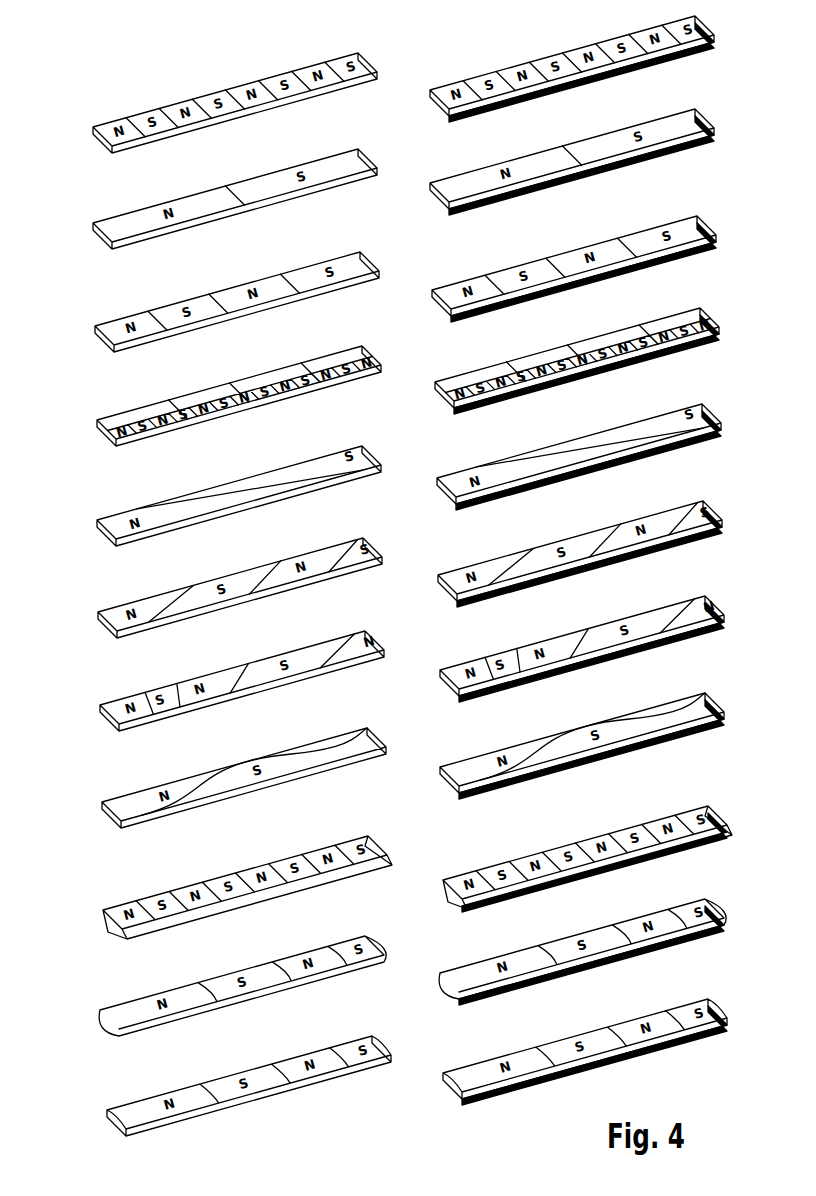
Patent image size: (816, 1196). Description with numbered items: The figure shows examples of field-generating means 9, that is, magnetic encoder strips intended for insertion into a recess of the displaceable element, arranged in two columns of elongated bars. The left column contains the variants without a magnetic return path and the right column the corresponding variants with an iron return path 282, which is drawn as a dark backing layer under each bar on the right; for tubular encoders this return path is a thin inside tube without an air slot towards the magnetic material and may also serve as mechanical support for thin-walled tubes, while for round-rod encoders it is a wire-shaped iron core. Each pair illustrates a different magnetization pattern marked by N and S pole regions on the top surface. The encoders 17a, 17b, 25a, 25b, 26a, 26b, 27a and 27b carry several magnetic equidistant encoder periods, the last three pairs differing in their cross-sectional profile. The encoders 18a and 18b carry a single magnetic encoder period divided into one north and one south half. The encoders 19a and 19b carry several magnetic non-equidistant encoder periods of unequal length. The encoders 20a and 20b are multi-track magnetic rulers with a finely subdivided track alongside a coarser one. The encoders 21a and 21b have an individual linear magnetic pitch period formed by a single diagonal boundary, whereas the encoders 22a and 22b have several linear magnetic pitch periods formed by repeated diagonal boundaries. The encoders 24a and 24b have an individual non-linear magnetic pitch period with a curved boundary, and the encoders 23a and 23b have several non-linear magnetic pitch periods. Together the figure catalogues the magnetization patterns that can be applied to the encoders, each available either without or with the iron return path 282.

The field-generating means 9 is at (397, 88).
The iron return path 282 is at (450, 1140).
The encoder with several equidistant encoder periods (without return path) 17a is at (206, 107).
The encoder with one encoder period (without return path) 18a is at (207, 203).
The encoder with several non-equidistant encoder periods (without return path) 19a is at (209, 303).
The multi-track magnetic ruler (without return path) 20a is at (212, 399).
The encoder with individual linear pitch period (without return path) 21a is at (213, 503).
The encoder with several linear pitch periods (without return path) 22a is at (214, 596).
The encoder with several non-linear pitch periods (without return path) 23a is at (216, 690).
The encoder with individual non-linear pitch period (without return path) 24a is at (218, 789).
The encoder with several equidistant encoder periods (without return path) 25a is at (222, 895).
The encoder with several equidistant encoder periods (without return path) 26a is at (220, 998).
The encoder with several equidistant encoder periods (without return path) 27a is at (224, 1092).
The encoder with several equidistant encoder periods (with return path) 17b is at (594, 66).
The encoder with one encoder period (with return path) 18b is at (594, 159).
The encoder with several non-equidistant encoder periods (with return path) 19b is at (597, 266).
The multi-track magnetic ruler (with return path) 20b is at (599, 358).
The encoder with individual linear pitch period (with return path) 21b is at (600, 454).
The encoder with several linear pitch periods (with return path) 22b is at (602, 551).
The encoder with several non-linear pitch periods (with return path) 23b is at (603, 646).
The encoder with individual non-linear pitch period (with return path) 24b is at (603, 743).
The encoder with several equidistant encoder periods (with return path) 25b is at (607, 857).
The encoder with several equidistant encoder periods (with return path) 26b is at (605, 949).
The encoder with several equidistant encoder periods (with return path) 27b is at (607, 1049).